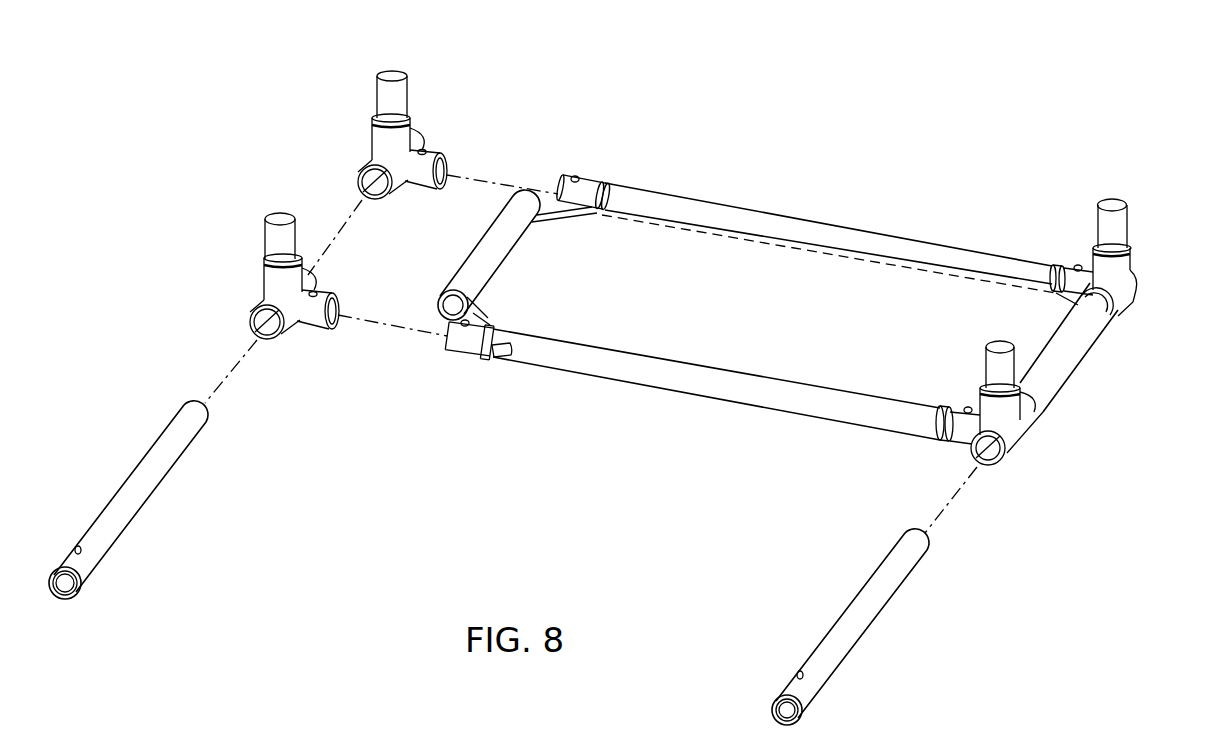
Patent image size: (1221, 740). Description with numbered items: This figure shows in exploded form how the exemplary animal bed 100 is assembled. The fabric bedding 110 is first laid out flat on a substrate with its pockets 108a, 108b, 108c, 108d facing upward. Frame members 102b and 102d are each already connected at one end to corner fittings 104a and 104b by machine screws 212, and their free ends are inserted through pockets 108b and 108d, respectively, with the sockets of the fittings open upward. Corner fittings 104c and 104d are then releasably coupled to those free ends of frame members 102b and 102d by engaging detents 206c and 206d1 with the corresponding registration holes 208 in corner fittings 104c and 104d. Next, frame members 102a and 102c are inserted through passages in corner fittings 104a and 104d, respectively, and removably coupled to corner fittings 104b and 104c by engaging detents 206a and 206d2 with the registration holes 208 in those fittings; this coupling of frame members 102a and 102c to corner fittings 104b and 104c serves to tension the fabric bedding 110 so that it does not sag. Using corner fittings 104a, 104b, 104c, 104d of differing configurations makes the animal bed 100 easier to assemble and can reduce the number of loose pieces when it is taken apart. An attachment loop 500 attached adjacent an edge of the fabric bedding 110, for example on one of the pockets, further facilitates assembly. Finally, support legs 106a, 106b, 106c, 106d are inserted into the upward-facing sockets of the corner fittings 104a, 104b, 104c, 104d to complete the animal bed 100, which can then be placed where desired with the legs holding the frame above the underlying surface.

The animal bed 100 is at (852, 112).
The frame member 102a is at (866, 620).
The frame member 102b is at (600, 190).
The frame member 102c is at (141, 477).
The frame member 102d is at (447, 342).
The corner fitting 104a is at (1008, 440).
The corner fitting 104b is at (1118, 313).
The corner fitting 104c is at (368, 166).
The corner fitting 104d is at (263, 291).
The support leg 106a is at (988, 352).
The support leg 106b is at (1108, 199).
The support leg 106c is at (388, 68).
The support leg 106d is at (272, 213).
The pocket 108a is at (1068, 364).
The pocket 108b is at (810, 228).
The pocket 108c is at (487, 262).
The pocket 108d is at (742, 385).
The fabric bedding 110 is at (688, 279).
The detent 206a is at (808, 676).
The detent 206c is at (575, 176).
The detent 206d1 is at (478, 322).
The detent 206d2 is at (82, 551).
The registration hole 208 is at (428, 145).
The machine screw 212 is at (1078, 266).
The attachment loop 500 is at (502, 357).